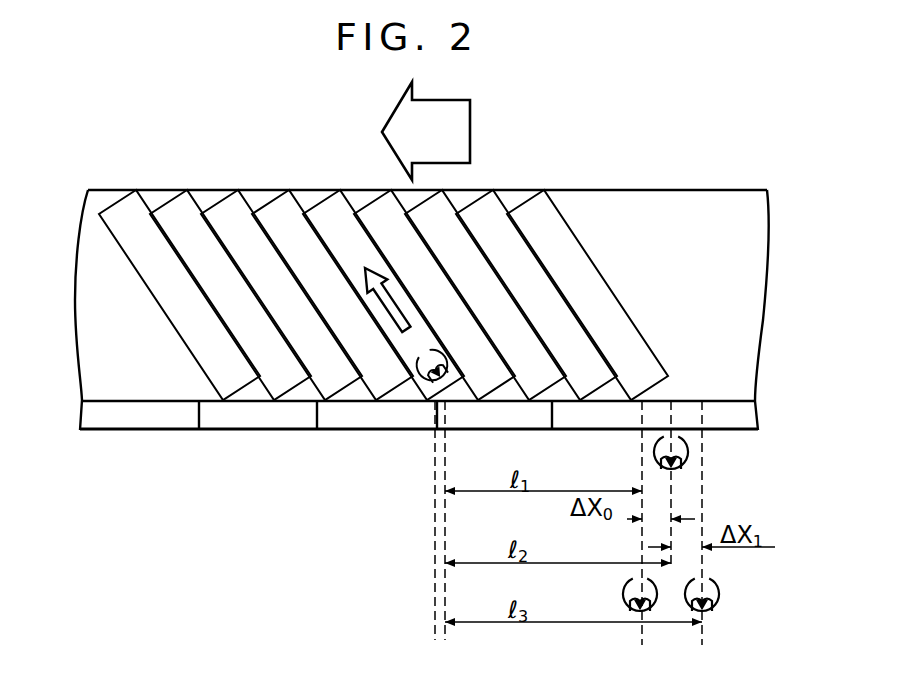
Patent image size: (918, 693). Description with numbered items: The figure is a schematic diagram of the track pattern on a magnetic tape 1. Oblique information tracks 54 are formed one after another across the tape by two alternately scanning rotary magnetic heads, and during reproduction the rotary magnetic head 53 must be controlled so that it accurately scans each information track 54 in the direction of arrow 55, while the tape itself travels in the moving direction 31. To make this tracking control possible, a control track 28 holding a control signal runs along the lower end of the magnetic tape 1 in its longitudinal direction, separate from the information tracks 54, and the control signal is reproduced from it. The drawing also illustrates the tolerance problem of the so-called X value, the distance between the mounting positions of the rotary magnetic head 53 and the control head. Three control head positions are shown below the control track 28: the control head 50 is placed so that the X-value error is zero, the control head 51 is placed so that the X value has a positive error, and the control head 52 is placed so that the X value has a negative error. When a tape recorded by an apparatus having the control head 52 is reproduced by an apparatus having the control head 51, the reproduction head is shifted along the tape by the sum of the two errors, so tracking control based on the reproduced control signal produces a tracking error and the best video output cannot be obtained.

The magnetic tape 1 is at (652, 190).
The control track 28 is at (753, 415).
The moving direction of the magnetic tape 31 is at (470, 131).
The control head 50 is at (688, 450).
The control head 51 is at (718, 598).
The control head 52 is at (656, 604).
The rotary magnetic head 53 is at (442, 355).
The information tracks 54 is at (320, 210).
The arrow 55 is at (406, 308).